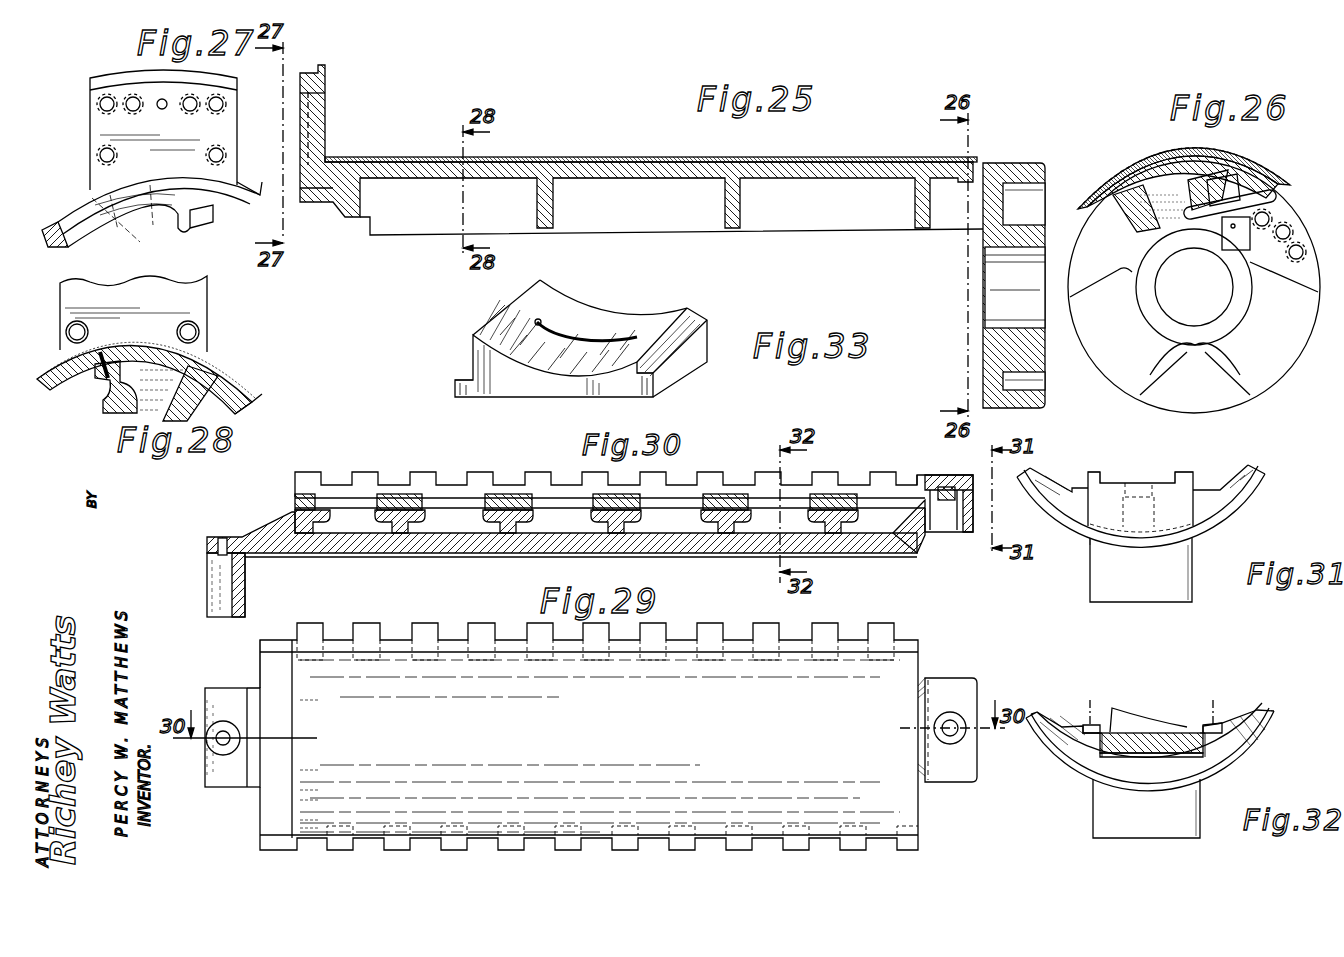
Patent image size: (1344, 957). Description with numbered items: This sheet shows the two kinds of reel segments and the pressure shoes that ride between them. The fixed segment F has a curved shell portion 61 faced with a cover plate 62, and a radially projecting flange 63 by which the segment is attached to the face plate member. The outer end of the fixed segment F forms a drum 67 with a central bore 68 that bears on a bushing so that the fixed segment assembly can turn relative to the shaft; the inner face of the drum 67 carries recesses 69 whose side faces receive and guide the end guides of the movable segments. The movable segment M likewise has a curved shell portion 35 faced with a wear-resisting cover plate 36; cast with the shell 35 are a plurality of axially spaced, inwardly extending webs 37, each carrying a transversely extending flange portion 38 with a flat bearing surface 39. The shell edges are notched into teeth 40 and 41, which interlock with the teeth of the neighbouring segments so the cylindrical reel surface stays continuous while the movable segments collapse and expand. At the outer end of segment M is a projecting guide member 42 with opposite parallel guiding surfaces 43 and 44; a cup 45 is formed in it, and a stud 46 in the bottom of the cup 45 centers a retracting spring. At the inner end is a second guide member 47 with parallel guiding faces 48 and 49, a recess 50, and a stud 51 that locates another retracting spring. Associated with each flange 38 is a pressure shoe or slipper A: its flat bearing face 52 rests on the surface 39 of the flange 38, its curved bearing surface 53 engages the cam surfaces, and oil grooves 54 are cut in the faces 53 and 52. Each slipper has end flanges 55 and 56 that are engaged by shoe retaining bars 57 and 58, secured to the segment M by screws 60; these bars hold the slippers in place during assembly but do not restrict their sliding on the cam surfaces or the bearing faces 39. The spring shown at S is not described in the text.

In FIG. 30, the curved shell portion 35 is at (908, 540).
In FIG. 32, the curved shell portion 35 is at (1245, 755).
In FIG. 30, the cover plate 36 is at (888, 555).
In FIG. 29, the cover plate 36 is at (457, 668).
In FIG. 32, the cover plate 36 is at (1260, 737).
In FIG. 30, the webs 37 is at (728, 535).
In FIG. 32, the webs 37 is at (1180, 760).
In FIG. 30, the flange portion 38 is at (745, 514).
In FIG. 32, the flange portion 38 is at (1090, 760).
In FIG. 30, the flat bearing surface 39 is at (712, 528).
In FIG. 32, the flat bearing surface 39 is at (1147, 732).
In FIG. 29, the teeth 40 is at (412, 625).
In FIG. 30, the teeth 41 is at (354, 460).
In FIG. 29, the teeth 41 is at (392, 849).
In FIG. 29, the guide member 42 is at (953, 698).
In FIG. 31, the guide member 42 is at (1100, 505).
In FIG. 31, the guiding surface 43 is at (1092, 478).
In FIG. 31, the guiding surface 44 is at (1196, 478).
In FIG. 30, the cup 45 is at (963, 528).
In FIG. 29, the cup 45 is at (970, 740).
In FIG. 31, the cup 45 is at (1225, 508).
In FIG. 30, the stud 46 is at (944, 487).
In FIG. 29, the stud 46 is at (955, 720).
In FIG. 31, the stud 46 is at (1138, 484).
In FIG. 30, the second guide member 47 is at (246, 596).
In FIG. 29, the second guide member 47 is at (228, 703).
In FIG. 31, the second guide member 47 is at (1100, 580).
In FIG. 32, the second guide member 47 is at (1117, 823).
In FIG. 29, the guiding face 48 is at (228, 757).
In FIG. 31, the guiding face 48 is at (1175, 588).
In FIG. 29, the guiding face 49 is at (228, 690).
In FIG. 30, the recess 50 is at (218, 600).
In FIG. 29, the recess 50 is at (212, 746).
In FIG. 30, the stud 51 is at (215, 552).
In FIG. 29, the stud 51 is at (223, 748).
In FIG. 33, the flat bearing face 52 is at (600, 397).
In FIG. 33, the curved bearing surface 53 is at (632, 327).
In FIG. 33, the oil grooves 54 is at (563, 322).
In FIG. 33, the end flange 55 is at (455, 388).
In FIG. 33, the end flange 56 is at (655, 388).
In FIG. 32, the shoe retaining bar 57 is at (1082, 727).
In FIG. 32, the shoe retaining bar 58 is at (1228, 722).
In FIG. 32, the screws 60 is at (1162, 694).
In FIG. 27, the curved shell portion 61 is at (78, 202).
In FIG. 28, the curved shell portion 61 is at (200, 368).
In FIG. 25, the curved shell portion 61 is at (497, 174).
In FIG. 26, the curved shell portion 61 is at (1128, 180).
In FIG. 28, the cover plate 62 is at (205, 385).
In FIG. 25, the cover plate 62 is at (540, 158).
In FIG. 26, the cover plate 62 is at (1240, 160).
In FIG. 27, the radially projecting flange 63 is at (112, 108).
In FIG. 28, the radially projecting flange 63 is at (185, 310).
In FIG. 25, the radially projecting flange 63 is at (315, 130).
In FIG. 25, the drum 67 is at (1035, 362).
In FIG. 25, the central bore 68 is at (1030, 298).
In FIG. 26, the central bore 68 is at (1210, 310).
In FIG. 26, the recesses 69 is at (1125, 350).
In FIG. 33, the pressure shoe A is at (590, 318).
In FIG. 30, the pressure shoe A is at (392, 495).
In FIG. 32, the pressure shoe A is at (1125, 722).
In FIG. 27, the fixed segment F is at (248, 190).
In FIG. 28, the fixed segment F is at (242, 404).
In FIG. 25, the fixed segment F is at (634, 165).
In FIG. 26, the fixed segment F is at (1082, 206).
In FIG. 26, the spring S is at (1258, 198).
In FIG. 29, the movable segment M is at (273, 682).